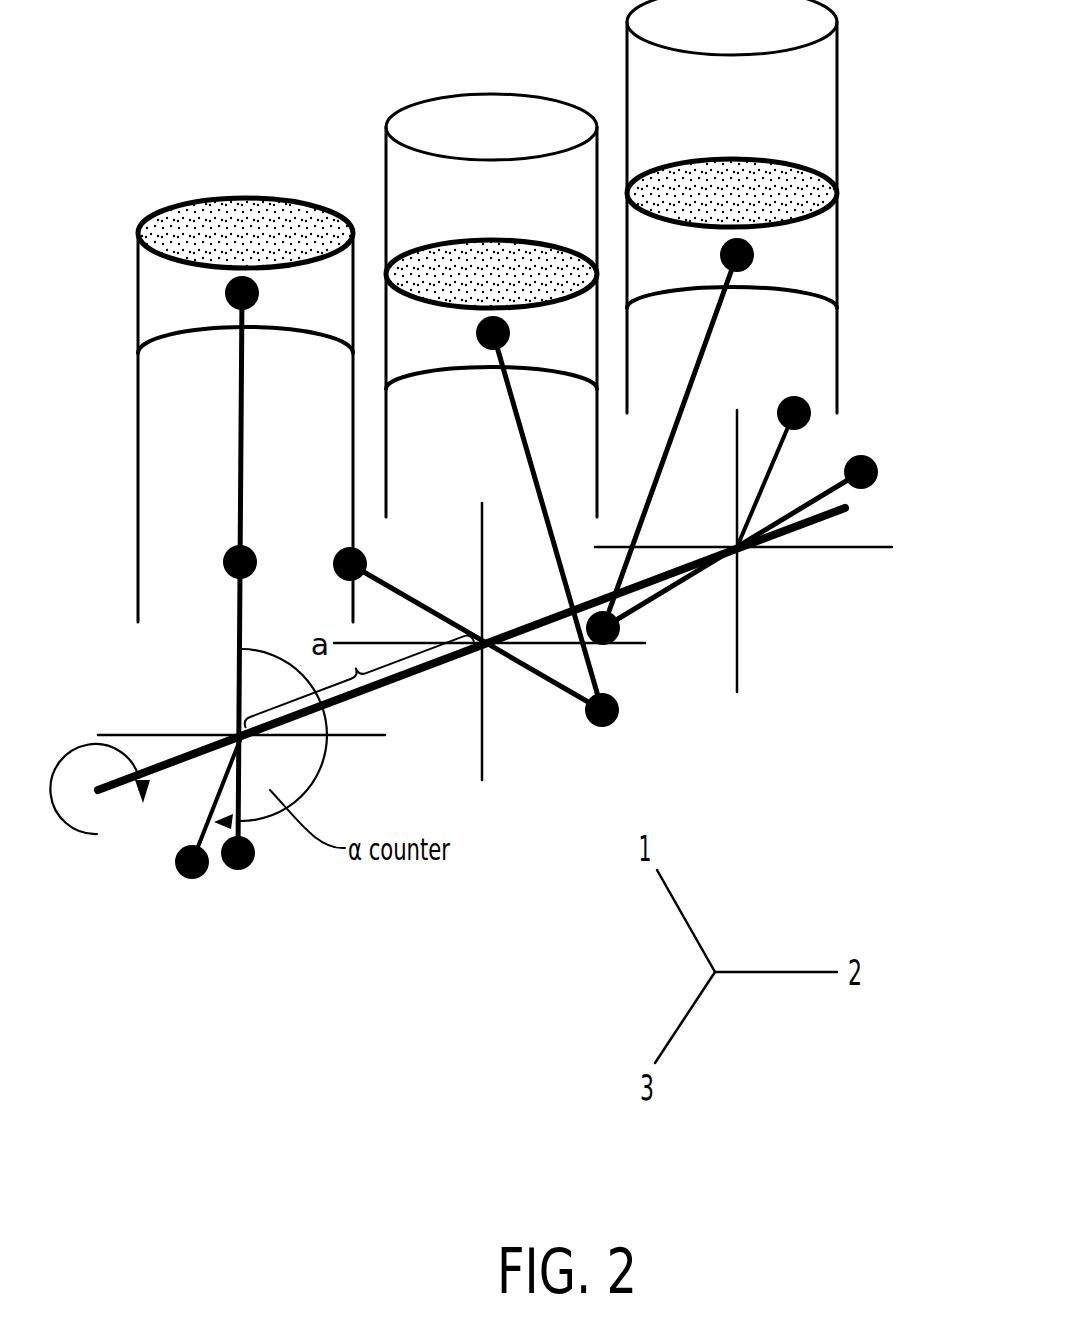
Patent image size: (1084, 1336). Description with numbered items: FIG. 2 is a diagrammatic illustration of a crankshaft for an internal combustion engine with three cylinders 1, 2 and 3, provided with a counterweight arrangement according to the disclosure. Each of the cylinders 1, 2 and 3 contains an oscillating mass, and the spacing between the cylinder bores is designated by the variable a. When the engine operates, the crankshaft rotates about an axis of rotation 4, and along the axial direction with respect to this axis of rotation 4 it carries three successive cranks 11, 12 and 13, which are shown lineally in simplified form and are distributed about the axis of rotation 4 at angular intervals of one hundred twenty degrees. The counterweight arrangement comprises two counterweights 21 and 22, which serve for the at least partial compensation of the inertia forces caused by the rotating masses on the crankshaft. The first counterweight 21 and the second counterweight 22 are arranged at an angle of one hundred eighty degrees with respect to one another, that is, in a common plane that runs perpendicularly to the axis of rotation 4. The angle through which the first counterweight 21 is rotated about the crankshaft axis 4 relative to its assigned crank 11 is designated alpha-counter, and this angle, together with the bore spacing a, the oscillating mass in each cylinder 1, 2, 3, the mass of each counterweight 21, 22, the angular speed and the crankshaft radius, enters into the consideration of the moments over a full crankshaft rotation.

The cylinder 1 is at (182, 438).
The cylinder 2 is at (483, 223).
The cylinder 3 is at (728, 120).
The axis of rotation 4 is at (423, 672).
The crank 11 is at (238, 617).
The crank 12 is at (377, 577).
The crank 13 is at (836, 488).
The first counterweight 21 is at (183, 878).
The second counterweight 22 is at (792, 397).